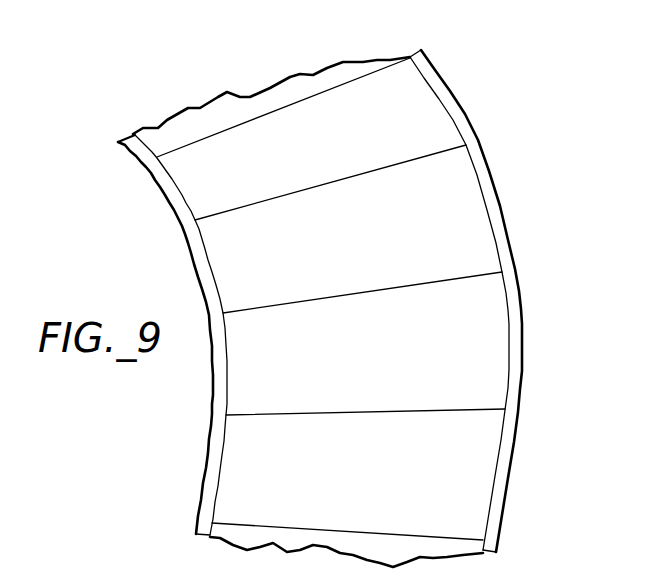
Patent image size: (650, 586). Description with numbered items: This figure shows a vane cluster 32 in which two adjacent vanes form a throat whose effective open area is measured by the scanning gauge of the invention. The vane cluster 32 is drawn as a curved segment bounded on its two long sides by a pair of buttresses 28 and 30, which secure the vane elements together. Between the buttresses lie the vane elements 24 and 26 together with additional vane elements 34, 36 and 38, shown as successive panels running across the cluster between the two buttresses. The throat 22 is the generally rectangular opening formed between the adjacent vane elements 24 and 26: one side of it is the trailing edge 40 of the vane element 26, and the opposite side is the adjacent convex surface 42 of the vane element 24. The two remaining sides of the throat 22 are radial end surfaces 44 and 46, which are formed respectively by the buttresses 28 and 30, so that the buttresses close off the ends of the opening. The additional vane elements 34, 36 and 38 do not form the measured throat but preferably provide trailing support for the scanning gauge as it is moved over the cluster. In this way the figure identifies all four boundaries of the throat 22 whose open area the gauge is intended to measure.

The throat 22 is at (380, 435).
The vane element 24 is at (490, 460).
The vane element 26 is at (487, 343).
The buttress 28 is at (212, 430).
The buttress 30 is at (518, 372).
The vane cluster 32 is at (557, 162).
The vane element 34 is at (478, 238).
The vane element 36 is at (425, 110).
The vane element 38 is at (330, 72).
The trailing edge 40 is at (308, 416).
The convex surface 42 is at (426, 481).
The radial end surface 44 is at (222, 482).
The radial end surface 46 is at (490, 512).